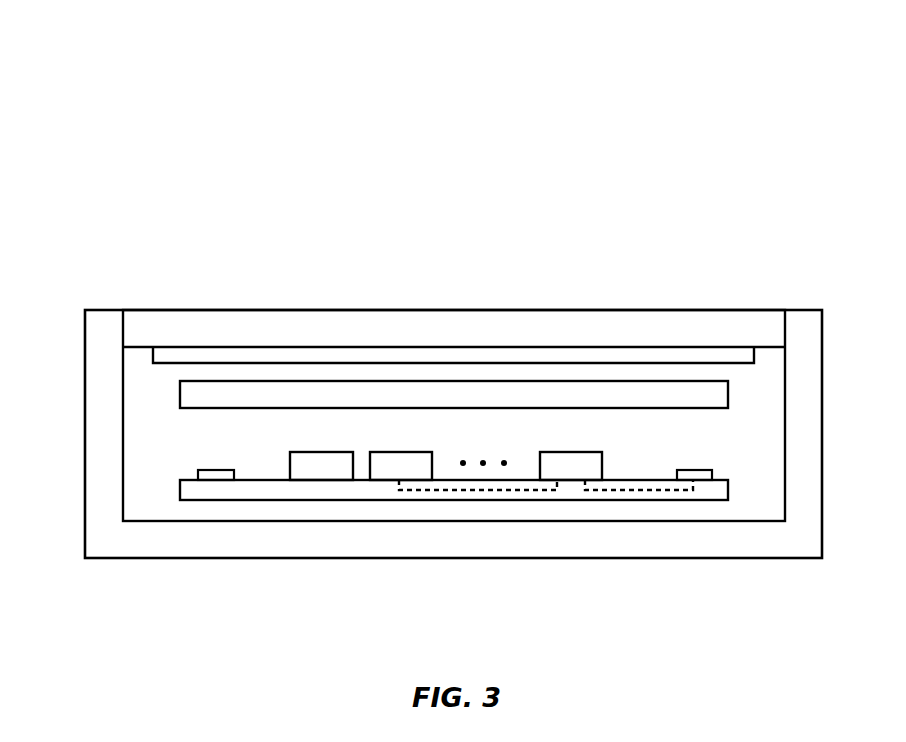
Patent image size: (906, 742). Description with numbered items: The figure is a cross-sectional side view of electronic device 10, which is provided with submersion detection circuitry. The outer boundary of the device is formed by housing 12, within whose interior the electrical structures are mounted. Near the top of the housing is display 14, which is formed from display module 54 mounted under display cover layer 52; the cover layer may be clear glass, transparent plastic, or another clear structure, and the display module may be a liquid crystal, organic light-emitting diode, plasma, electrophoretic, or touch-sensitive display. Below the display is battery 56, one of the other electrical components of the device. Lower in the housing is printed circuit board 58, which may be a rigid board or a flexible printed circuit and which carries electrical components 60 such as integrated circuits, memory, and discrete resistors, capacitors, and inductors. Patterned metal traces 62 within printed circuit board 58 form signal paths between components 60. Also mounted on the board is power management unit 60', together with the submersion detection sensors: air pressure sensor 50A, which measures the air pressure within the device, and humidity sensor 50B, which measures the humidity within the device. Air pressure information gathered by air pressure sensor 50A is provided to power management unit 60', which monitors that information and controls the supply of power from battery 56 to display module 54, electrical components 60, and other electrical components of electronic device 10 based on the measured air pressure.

The electronic device 10 is at (683, 98).
The housing 12 is at (805, 415).
The display 14 is at (703, 297).
The display cover layer 52 is at (158, 318).
The display module 54 is at (448, 355).
The battery 56 is at (190, 393).
The printed circuit board 58 is at (233, 500).
The air pressure sensor 50A is at (693, 472).
The humidity sensor 50B is at (220, 472).
The electrical components 60 is at (361, 534).
The power management unit 60' is at (569, 534).
The patterned metal traces 62 is at (488, 490).